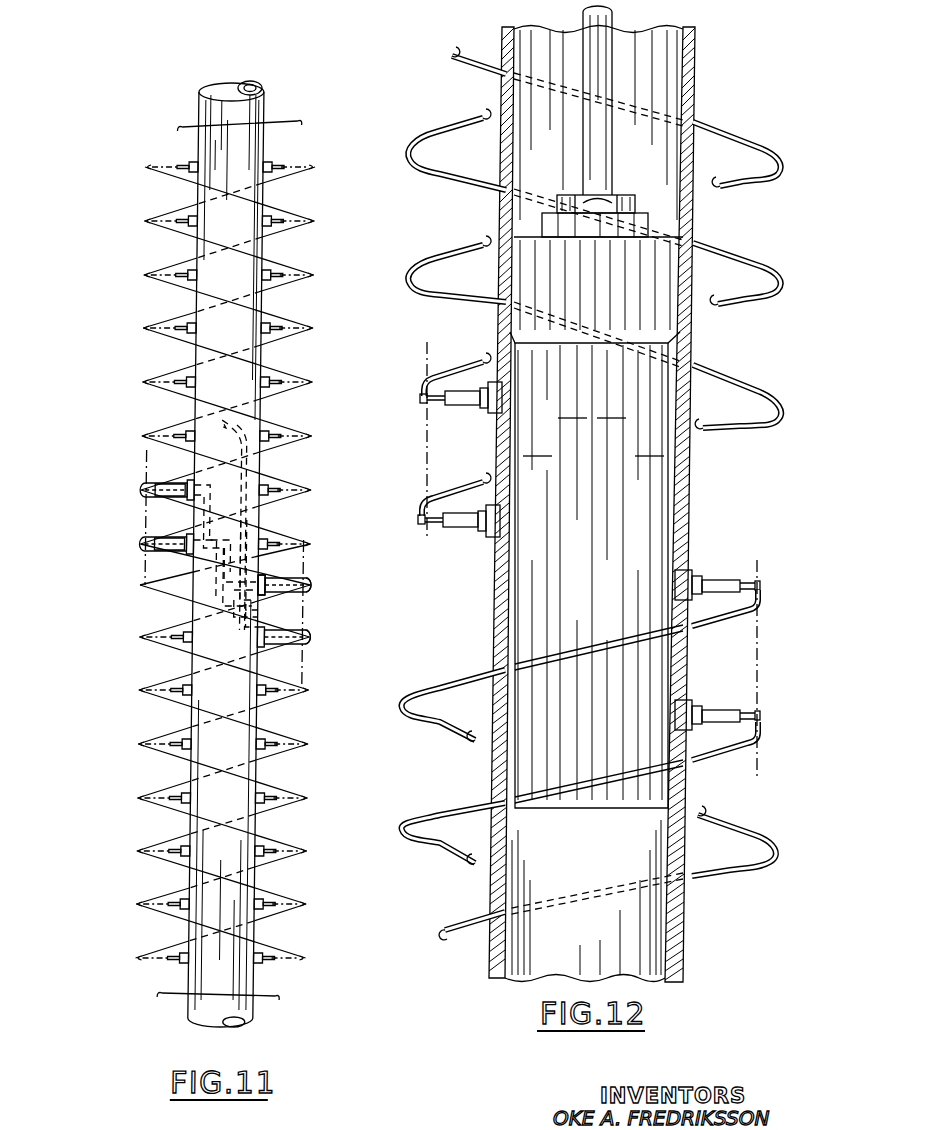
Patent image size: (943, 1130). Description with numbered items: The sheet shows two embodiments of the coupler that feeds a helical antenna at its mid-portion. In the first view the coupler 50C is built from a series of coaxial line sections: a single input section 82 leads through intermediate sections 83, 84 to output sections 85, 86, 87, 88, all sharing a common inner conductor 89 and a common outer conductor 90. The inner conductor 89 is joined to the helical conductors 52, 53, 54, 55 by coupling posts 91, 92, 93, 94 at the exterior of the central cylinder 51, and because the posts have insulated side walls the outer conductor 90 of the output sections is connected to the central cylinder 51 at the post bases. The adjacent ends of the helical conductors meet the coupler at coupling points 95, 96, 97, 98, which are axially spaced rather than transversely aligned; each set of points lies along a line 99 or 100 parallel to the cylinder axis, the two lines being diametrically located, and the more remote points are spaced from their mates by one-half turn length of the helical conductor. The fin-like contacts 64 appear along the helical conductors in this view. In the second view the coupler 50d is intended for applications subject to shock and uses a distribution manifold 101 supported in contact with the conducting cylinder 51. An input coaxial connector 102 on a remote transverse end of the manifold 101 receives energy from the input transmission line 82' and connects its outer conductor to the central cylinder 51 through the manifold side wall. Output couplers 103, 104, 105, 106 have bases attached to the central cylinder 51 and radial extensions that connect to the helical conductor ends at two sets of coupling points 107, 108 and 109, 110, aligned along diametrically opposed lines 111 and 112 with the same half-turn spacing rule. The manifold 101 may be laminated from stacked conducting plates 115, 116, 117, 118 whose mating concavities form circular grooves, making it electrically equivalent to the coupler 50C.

In FIG. 11, the coupler 50C is at (136, 603).
In FIG. 12, the coupler 50d is at (706, 508).
In FIG. 11, the central cylinder 51 is at (264, 458).
In FIG. 12, the central cylinder 51 is at (683, 912).
In FIG. 11, the helical conductor 52 is at (163, 320).
In FIG. 12, the helical conductor 52 is at (752, 378).
In FIG. 11, the helical conductor 53 is at (164, 270).
In FIG. 12, the helical conductor 53 is at (445, 135).
In FIG. 11, the helical conductor 54 is at (168, 750).
In FIG. 12, the helical conductor 54 is at (437, 744).
In FIG. 11, the helical conductor 55 is at (167, 697).
In FIG. 12, the helical conductor 55 is at (440, 868).
In FIG. 11, the fin contacts 64 is at (300, 272).
In FIG. 11, the input section 82 is at (276, 512).
In FIG. 12, the input transmission line 82' is at (644, 97).
In FIG. 11, the intermediate section 83 is at (252, 528).
In FIG. 11, the intermediate section 84 is at (228, 588).
In FIG. 11, the output section 85 is at (210, 510).
In FIG. 11, the output section 86 is at (210, 530).
In FIG. 11, the output section 87 is at (281, 578).
In FIG. 11, the output section 88 is at (316, 595).
In FIG. 11, the inner conductor 89 is at (256, 612).
In FIG. 11, the outer conductor 90 is at (316, 620).
In FIG. 11, the coupling post 91 is at (168, 487).
In FIG. 11, the coupling post 92 is at (171, 552).
In FIG. 11, the coupling post 93 is at (313, 572).
In FIG. 11, the coupling post 94 is at (297, 642).
In FIG. 11, the coupling point 95 is at (145, 488).
In FIG. 11, the coupling point 96 is at (145, 540).
In FIG. 11, the coupling point 97 is at (309, 577).
In FIG. 11, the coupling point 98 is at (307, 633).
In FIG. 11, the line 99 is at (310, 672).
In FIG. 11, the line 100 is at (151, 455).
In FIG. 12, the distribution manifold 101 is at (604, 504).
In FIG. 12, the input coaxial connector 102 is at (636, 209).
In FIG. 12, the output coupler 103 is at (470, 408).
In FIG. 12, the output coupler 104 is at (462, 530).
In FIG. 12, the output coupler 105 is at (720, 578).
In FIG. 12, the output coupler 106 is at (718, 706).
In FIG. 12, the coupling point 107 is at (420, 395).
In FIG. 12, the coupling point 108 is at (420, 517).
In FIG. 12, the coupling point 109 is at (762, 588).
In FIG. 12, the coupling point 110 is at (762, 722).
In FIG. 12, the line 111 is at (425, 361).
In FIG. 12, the line 112 is at (758, 756).
In FIG. 12, the conducting plate 115 is at (541, 446).
In FIG. 12, the conducting plate 116 is at (576, 408).
In FIG. 12, the conducting plate 117 is at (615, 408).
In FIG. 12, the conducting plate 118 is at (653, 446).